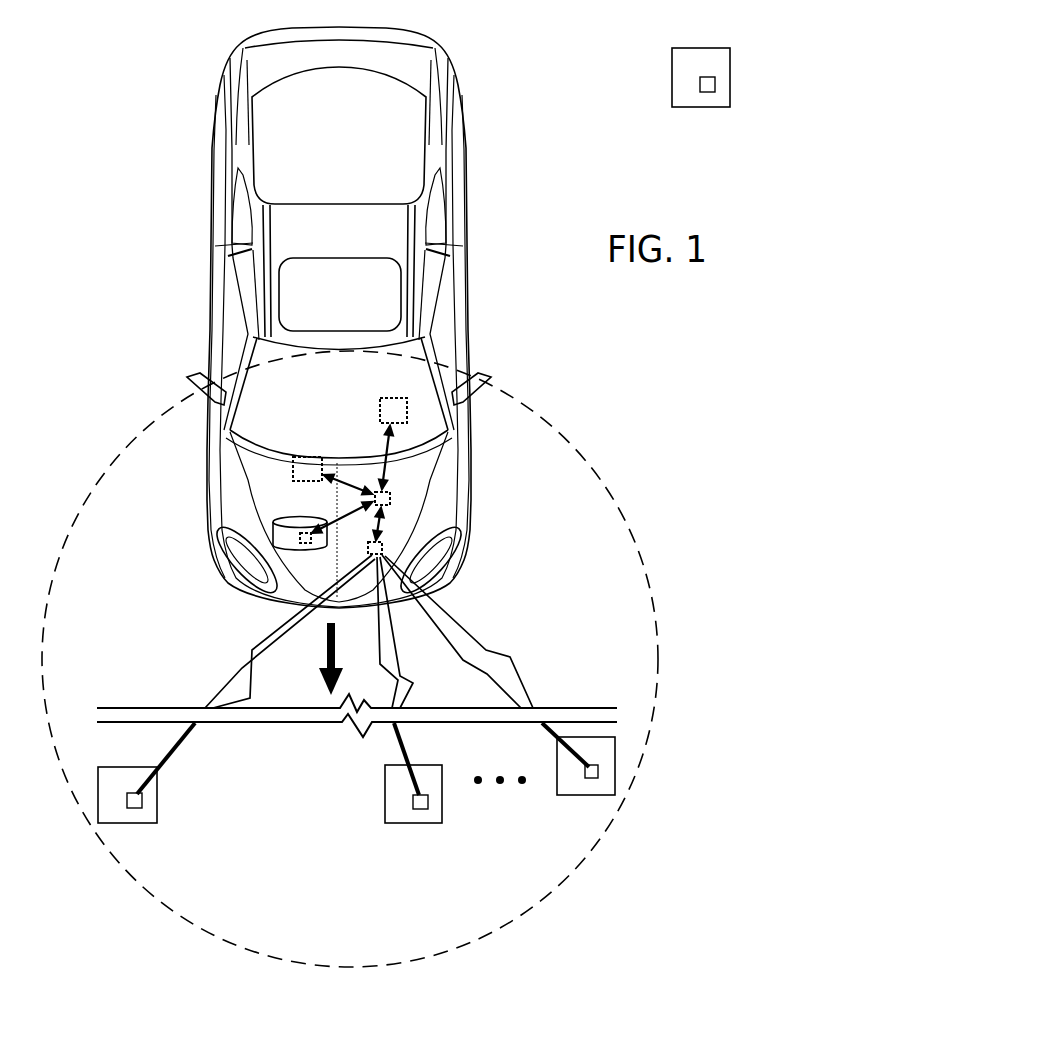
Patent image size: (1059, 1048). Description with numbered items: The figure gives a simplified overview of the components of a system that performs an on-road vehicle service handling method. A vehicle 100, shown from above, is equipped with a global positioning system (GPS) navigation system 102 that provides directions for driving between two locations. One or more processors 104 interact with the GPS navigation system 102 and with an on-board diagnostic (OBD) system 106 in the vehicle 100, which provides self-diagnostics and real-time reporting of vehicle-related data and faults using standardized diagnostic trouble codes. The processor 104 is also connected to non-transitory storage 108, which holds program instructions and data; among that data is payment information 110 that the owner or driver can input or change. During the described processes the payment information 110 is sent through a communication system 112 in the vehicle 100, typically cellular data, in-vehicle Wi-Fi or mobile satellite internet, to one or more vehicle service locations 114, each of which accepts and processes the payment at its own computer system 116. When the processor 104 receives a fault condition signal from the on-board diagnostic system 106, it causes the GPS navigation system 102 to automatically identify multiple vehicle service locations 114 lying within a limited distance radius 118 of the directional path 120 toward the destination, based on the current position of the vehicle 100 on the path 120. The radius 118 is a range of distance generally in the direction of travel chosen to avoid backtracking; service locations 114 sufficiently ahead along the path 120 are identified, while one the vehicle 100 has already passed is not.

The vehicle 100 is at (359, 245).
The global positioning system (GPS) navigation system 102 is at (400, 411).
The processor 104 is at (392, 498).
The on-board diagnostic (OBD) system 106 is at (293, 464).
The non-transitory storage 108 is at (282, 531).
The payment information 110 is at (303, 543).
The communication system 112 is at (383, 548).
The vehicle service location 114 is at (157, 778).
The service location computer system 116 is at (142, 800).
The limited distance radius 118 is at (600, 477).
The directional path 120 is at (323, 687).